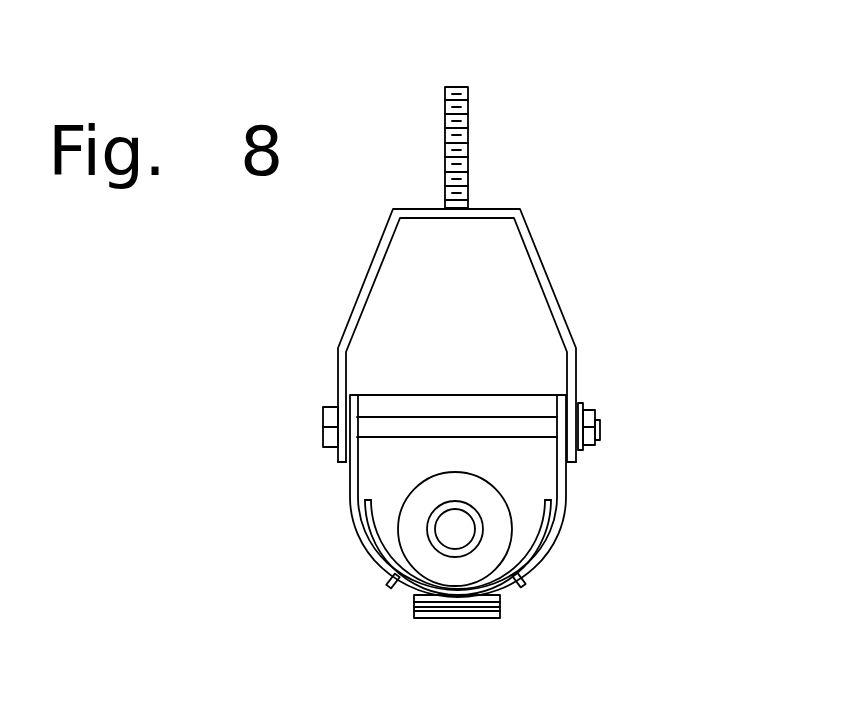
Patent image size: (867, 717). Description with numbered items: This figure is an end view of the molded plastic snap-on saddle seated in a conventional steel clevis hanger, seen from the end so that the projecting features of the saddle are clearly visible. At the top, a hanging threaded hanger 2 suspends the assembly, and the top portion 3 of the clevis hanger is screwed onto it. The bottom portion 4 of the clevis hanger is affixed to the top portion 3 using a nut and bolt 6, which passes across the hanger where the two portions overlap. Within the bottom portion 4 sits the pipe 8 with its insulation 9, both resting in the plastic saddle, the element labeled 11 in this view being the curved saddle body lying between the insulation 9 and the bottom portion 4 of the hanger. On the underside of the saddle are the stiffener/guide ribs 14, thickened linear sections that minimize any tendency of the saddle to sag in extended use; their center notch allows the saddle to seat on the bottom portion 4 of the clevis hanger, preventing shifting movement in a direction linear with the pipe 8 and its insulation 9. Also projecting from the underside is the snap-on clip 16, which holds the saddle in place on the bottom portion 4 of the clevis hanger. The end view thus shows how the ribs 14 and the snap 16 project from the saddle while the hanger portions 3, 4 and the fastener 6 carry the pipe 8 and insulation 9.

The threaded hanger 2 is at (484, 110).
The top portion of the clevis hanger 3 is at (548, 218).
The bottom portion of the clevis hanger 4 is at (326, 470).
The nut and bolt 6 is at (606, 382).
The pipe 8 is at (398, 528).
The insulation 9 is at (497, 555).
The liner cradle 11 is at (571, 487).
The stiffener/guide ribs 14 is at (359, 589).
The snap-on clip 16 is at (421, 635).